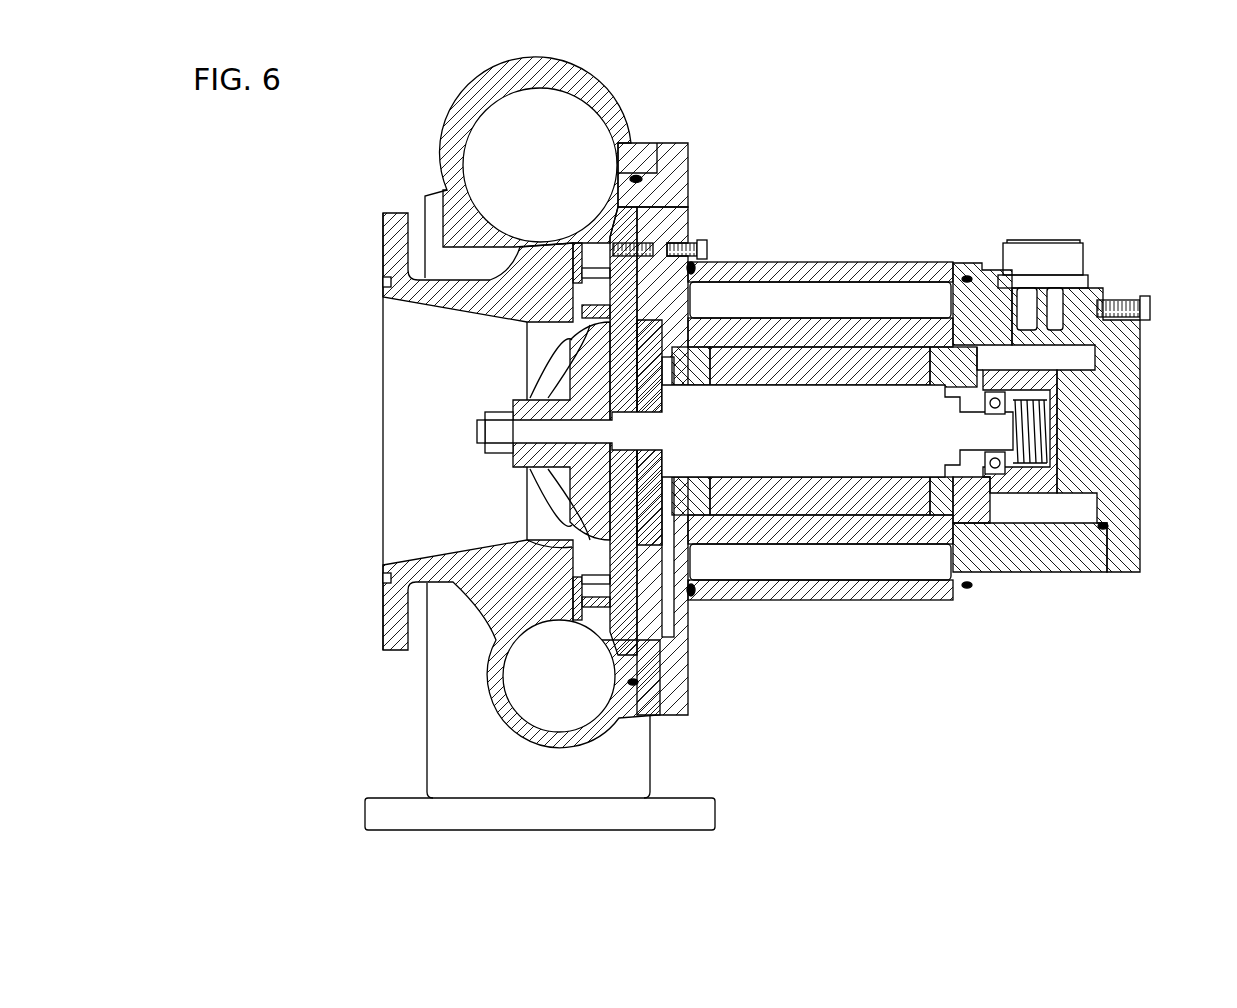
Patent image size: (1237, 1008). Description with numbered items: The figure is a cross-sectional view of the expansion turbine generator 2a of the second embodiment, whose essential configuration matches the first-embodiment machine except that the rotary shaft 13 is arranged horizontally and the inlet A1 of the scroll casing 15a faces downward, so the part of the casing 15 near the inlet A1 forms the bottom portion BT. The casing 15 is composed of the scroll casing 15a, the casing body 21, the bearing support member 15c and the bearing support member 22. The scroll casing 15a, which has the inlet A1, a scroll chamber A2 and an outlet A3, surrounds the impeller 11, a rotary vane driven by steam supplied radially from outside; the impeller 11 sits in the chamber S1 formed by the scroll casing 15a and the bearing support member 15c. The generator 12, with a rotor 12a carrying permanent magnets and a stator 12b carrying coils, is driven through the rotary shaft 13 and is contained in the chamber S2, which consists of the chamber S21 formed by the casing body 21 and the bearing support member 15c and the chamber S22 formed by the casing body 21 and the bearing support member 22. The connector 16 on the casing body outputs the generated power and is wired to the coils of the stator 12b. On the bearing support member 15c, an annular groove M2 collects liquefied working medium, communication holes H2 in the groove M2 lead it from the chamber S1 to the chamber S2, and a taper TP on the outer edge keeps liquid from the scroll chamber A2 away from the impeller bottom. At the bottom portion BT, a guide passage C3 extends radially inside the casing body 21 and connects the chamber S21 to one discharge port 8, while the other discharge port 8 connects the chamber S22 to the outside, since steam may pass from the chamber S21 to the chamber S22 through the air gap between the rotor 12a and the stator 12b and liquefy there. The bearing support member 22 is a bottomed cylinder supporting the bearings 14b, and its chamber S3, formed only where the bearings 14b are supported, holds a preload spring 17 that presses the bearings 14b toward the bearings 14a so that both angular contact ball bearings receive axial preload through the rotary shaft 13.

The expansion turbine generator 2a is at (1103, 203).
The discharge port 8 is at (687, 645).
The impeller 11 is at (522, 400).
The generator 12 is at (874, 186).
The rotor 12a is at (818, 405).
The stator 12b is at (863, 353).
The rotary shaft 13 is at (630, 443).
The bearing 14a is at (693, 547).
The bearing 14b is at (990, 483).
The casing 15 is at (915, 602).
The scroll casing 15a is at (428, 175).
The bearing support member 15c is at (632, 218).
The connector 16 is at (1087, 260).
The preload spring 17 is at (1040, 443).
The casing body 21 is at (965, 305).
The bearing support member 22 is at (1112, 462).
The inlet A1 is at (378, 830).
The scroll chamber A2 is at (497, 127).
The outlet A3 is at (383, 432).
The chamber S1 is at (567, 355).
The chamber S2 is at (860, 400).
The chamber S21 is at (672, 404).
The chamber S22 is at (1042, 350).
The chamber S3 is at (1053, 432).
The taper TP is at (612, 222).
The communication hole H2 is at (697, 345).
The guide passage C3 is at (693, 632).
The groove M2 is at (610, 503).
The bottom portion BT is at (828, 633).